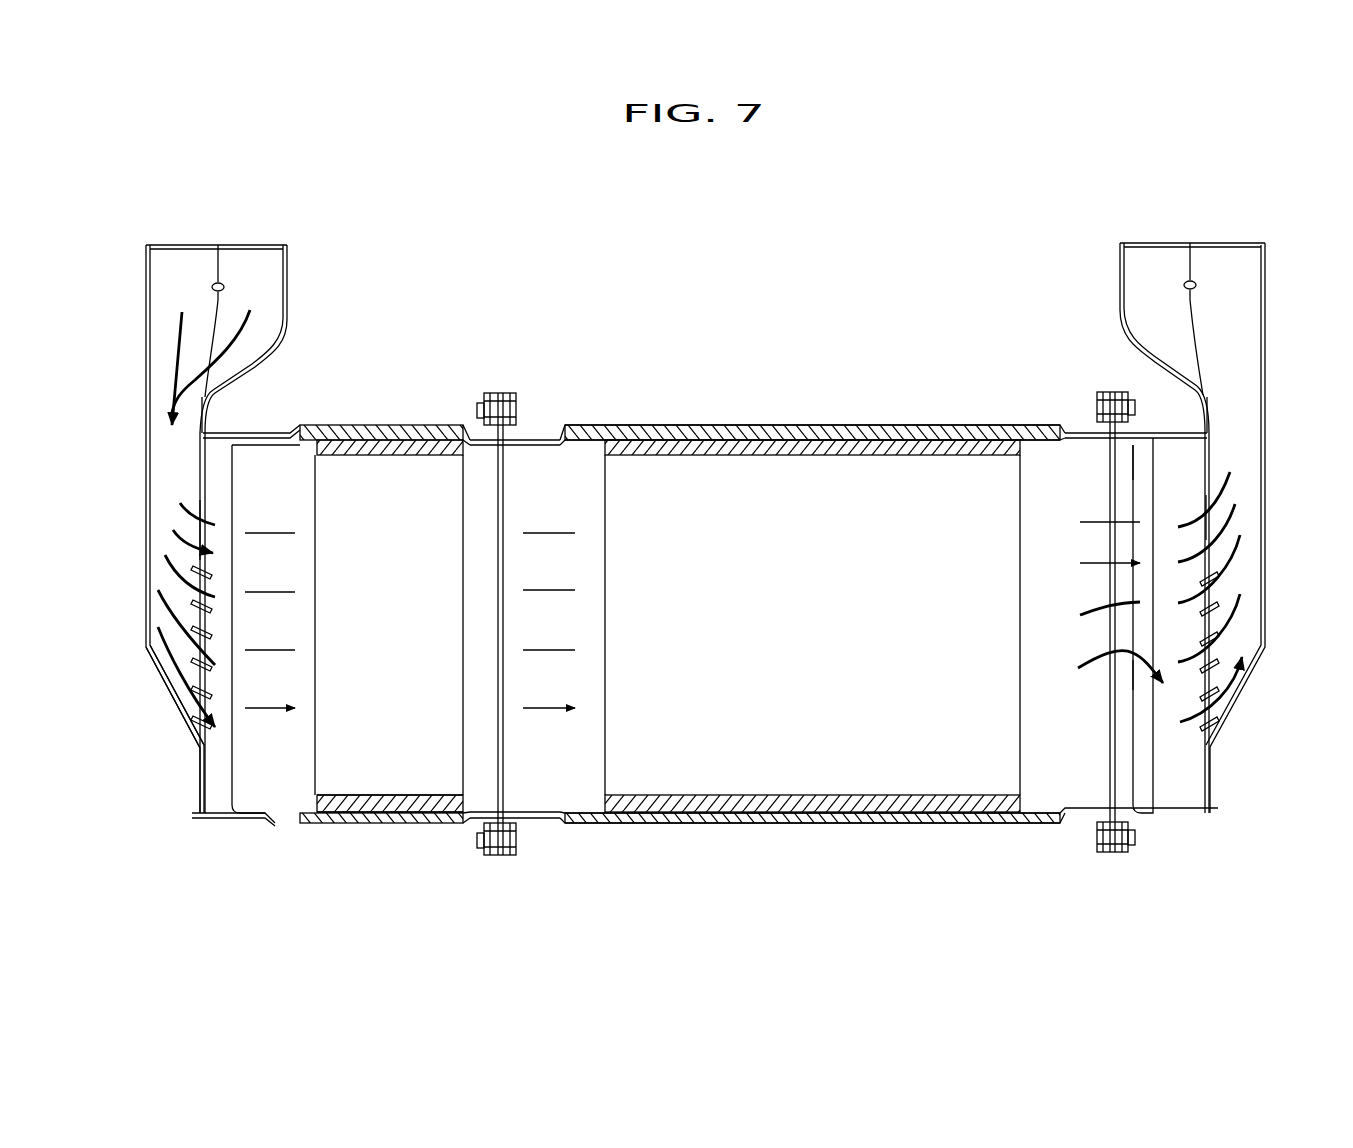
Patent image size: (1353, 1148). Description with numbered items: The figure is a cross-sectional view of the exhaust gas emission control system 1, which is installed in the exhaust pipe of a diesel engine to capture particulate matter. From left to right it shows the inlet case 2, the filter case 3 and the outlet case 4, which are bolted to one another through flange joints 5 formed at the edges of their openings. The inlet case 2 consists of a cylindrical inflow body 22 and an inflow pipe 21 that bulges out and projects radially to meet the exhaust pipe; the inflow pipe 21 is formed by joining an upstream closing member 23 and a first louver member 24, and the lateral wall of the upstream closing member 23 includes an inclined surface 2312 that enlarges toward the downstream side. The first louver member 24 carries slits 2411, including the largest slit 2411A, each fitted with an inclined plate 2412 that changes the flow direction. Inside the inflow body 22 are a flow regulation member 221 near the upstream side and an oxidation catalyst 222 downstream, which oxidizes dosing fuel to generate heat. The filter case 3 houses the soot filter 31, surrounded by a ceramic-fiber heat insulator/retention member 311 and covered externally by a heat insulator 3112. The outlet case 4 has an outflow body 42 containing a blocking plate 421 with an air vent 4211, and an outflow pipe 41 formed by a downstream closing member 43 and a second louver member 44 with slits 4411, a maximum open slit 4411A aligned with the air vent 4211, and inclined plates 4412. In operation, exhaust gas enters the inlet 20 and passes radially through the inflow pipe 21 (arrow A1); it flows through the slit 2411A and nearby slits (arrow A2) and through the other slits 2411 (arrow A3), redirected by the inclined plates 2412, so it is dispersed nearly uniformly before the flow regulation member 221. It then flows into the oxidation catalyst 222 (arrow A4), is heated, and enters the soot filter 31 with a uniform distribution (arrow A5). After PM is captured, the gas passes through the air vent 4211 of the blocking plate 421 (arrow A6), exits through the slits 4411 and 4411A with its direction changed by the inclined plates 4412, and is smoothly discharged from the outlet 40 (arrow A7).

The exhaust gas emission control system 1 is at (785, 190).
The inlet case 2 is at (432, 245).
The filter case 3 is at (852, 269).
The outlet case 4 is at (1145, 193).
The flange joint 5 is at (1107, 852).
The inlet 20 is at (250, 243).
The inflow pipe 21 is at (310, 258).
The inflow body 22 is at (367, 392).
The upstream closing member 23 is at (146, 384).
The first louver member 24 is at (215, 410).
The soot filter 31 is at (670, 475).
The heat insulator/retention member 311 is at (813, 443).
The heat insulator 3112 is at (900, 432).
The outlet 40 is at (1232, 243).
The outflow pipe 41 is at (1095, 292).
The outflow body 42 is at (1140, 378).
The downstream closing member 43 is at (1265, 348).
The second louver member 44 is at (1203, 405).
The flow regulation member 221 is at (233, 785).
The oxidation catalyst 222 is at (405, 777).
The blocking plate 421 is at (1127, 728).
The inclined surface 2312 is at (168, 697).
The slit 2411 is at (207, 635).
The slit 2411A is at (193, 505).
The inclined plate 2412 is at (207, 580).
The air vent 4211 is at (1128, 483).
The slit 4411 is at (1120, 608).
The slit 4411A is at (1200, 505).
The inclined plate 4412 is at (1132, 675).
The arrow A1 is at (200, 400).
The arrow A2 is at (173, 532).
The arrow A3 is at (158, 627).
The arrow A4 is at (300, 708).
The arrow A5 is at (530, 707).
The arrow A6 is at (1078, 659).
The arrow A7 is at (1255, 665).